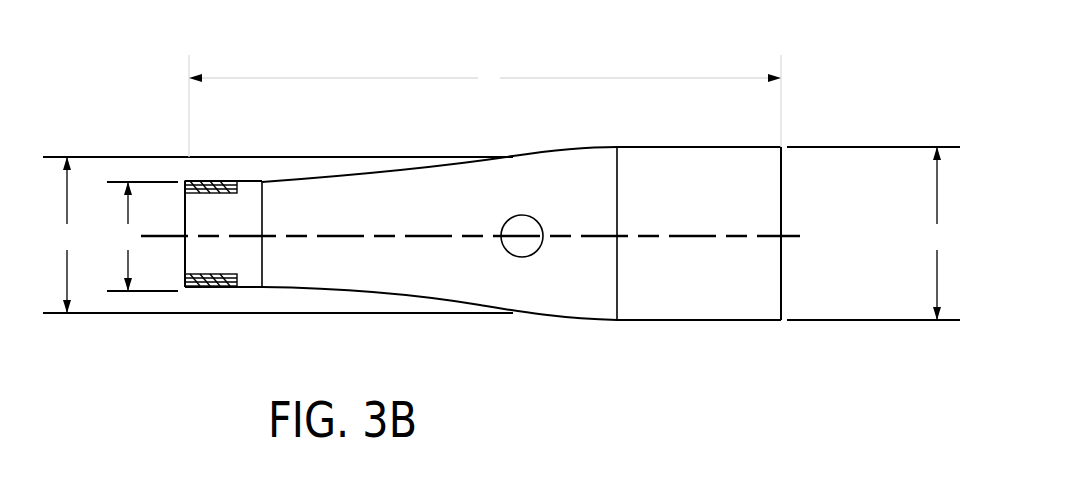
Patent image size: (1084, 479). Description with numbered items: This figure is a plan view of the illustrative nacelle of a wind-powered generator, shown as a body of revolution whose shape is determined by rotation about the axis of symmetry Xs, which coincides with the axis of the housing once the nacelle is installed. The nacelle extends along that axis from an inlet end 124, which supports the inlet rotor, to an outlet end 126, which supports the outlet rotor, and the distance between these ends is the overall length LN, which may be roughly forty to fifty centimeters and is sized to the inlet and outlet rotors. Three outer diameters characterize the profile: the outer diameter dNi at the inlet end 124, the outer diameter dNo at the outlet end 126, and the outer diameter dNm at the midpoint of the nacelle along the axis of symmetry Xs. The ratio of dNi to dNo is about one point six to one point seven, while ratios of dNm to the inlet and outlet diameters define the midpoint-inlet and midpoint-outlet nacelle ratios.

The outlet end 126 is at (190, 287).
The inlet end 124 is at (775, 320).
The axis of symmetry Xs is at (683, 236).
The overall length of nacelle LN is at (485, 106).
The outer diameter of the nacelle at a midpoint dNm is at (70, 235).
The outer diameter of the nacelle at the outlet end dNo is at (142, 236).
The outer diameter of the nacelle at the inlet end dNi is at (940, 233).